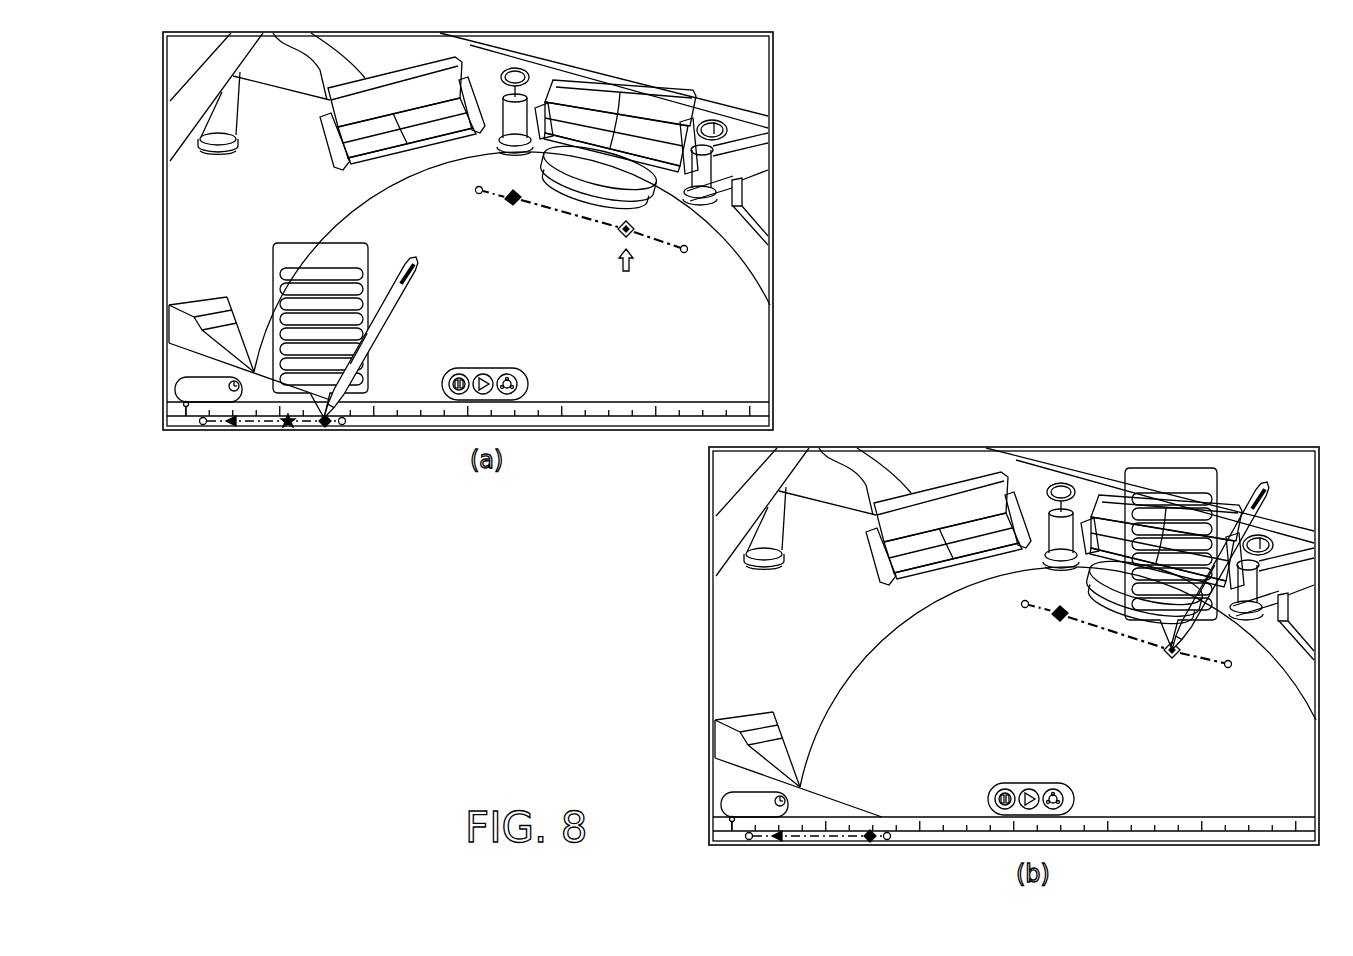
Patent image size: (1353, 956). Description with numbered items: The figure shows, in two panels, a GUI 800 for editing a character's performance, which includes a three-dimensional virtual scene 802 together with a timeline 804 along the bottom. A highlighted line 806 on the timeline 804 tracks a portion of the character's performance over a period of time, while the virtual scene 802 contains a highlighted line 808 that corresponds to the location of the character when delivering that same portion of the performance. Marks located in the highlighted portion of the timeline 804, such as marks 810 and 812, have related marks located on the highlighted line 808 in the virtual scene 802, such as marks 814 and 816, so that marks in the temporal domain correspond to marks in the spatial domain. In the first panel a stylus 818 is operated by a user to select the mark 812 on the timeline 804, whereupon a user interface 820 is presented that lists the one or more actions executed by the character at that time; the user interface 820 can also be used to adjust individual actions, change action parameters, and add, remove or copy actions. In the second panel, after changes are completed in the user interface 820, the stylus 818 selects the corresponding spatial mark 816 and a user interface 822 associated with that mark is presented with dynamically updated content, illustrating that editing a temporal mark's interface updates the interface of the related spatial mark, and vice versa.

The GUI 800 is at (775, 78).
The three-dimensional virtual scene 802 is at (469, 224).
The timeline 804 is at (156, 404).
The highlighted line 806 is at (288, 428).
The highlighted line 808 is at (562, 232).
The mark 810 is at (233, 428).
The mark 812 is at (328, 425).
The mark 814 is at (508, 203).
The mark 816 is at (632, 234).
The stylus 818 is at (401, 310).
The user interface 820 is at (308, 243).
The user interface 822 is at (1218, 478).